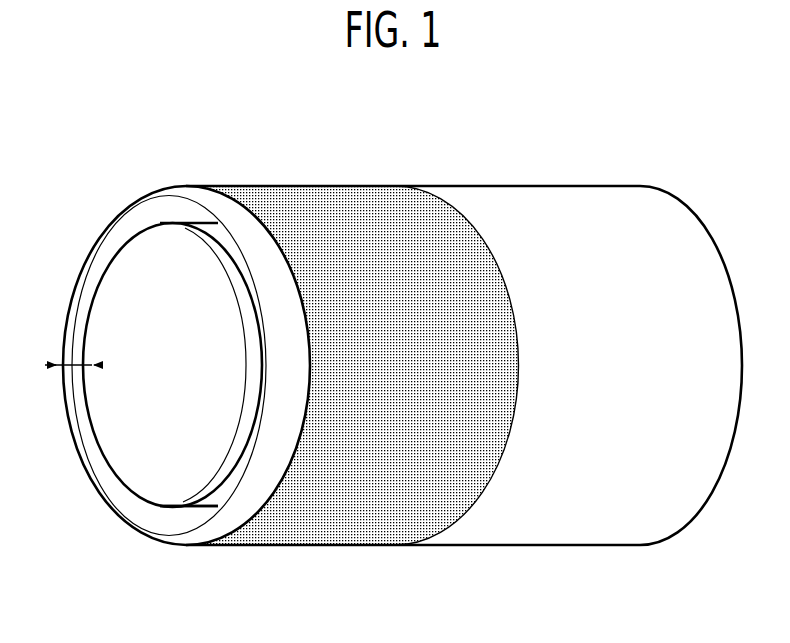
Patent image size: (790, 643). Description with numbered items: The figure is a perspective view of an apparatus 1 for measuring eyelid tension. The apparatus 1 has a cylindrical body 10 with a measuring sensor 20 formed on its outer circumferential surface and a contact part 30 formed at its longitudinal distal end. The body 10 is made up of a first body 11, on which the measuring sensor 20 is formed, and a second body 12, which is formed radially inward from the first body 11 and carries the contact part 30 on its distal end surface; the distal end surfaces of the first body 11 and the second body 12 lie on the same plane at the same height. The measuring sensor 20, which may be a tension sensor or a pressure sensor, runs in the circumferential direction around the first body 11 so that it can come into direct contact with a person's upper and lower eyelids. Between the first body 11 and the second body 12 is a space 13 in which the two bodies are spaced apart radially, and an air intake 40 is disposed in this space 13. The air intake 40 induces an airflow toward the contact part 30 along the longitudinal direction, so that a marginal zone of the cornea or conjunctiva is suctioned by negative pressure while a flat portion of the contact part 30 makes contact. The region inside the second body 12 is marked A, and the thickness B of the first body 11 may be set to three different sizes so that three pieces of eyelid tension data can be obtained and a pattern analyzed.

The apparatus for measuring eyelid tension 1 is at (382, 338).
The body 10 is at (185, 310).
The first body 11 is at (149, 180).
The second body 12 is at (124, 222).
The space 13 is at (184, 212).
The measuring sensor 20 is at (336, 178).
The contact part 30 is at (115, 432).
The air intake 40 is at (214, 494).
The inner region A is at (164, 364).
The thickness of the first body B is at (60, 365).